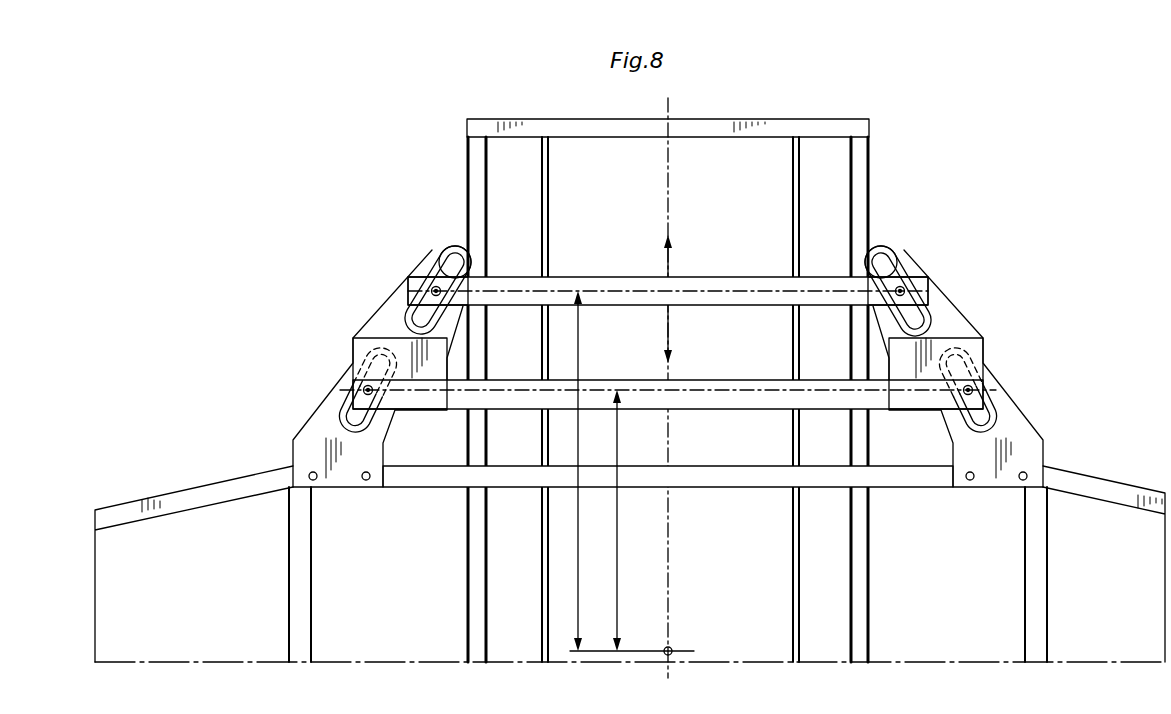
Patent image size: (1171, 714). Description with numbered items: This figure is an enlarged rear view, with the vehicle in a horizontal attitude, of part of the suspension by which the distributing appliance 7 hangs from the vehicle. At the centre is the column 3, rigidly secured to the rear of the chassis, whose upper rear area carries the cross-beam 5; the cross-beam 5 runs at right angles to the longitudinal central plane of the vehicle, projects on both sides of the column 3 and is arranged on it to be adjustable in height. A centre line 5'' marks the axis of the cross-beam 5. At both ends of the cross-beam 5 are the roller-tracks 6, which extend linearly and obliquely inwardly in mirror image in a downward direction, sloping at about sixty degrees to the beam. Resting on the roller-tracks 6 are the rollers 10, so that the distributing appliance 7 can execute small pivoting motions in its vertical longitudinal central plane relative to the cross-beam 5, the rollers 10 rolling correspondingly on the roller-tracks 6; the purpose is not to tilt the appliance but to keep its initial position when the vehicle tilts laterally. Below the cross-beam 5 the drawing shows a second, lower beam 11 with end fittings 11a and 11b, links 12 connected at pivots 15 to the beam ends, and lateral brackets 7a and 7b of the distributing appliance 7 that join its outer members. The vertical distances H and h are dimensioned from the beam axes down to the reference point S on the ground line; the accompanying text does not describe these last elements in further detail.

The column 3 is at (858, 190).
The cross-beam 5 is at (668, 260).
The beam axis 5'' is at (607, 253).
The roller-tracks 6 is at (453, 248).
The distributing appliance 7 is at (1108, 466).
The left bracket 7a is at (303, 452).
The right bracket 7b is at (1007, 443).
The roller 10 is at (395, 321).
The lower cross beam 11 is at (718, 383).
The left beam end plate 11a is at (400, 292).
The right beam end plate 11b is at (940, 297).
The link 12 is at (447, 262).
The pivot pin 15 is at (431, 291).
The height of upper beam H is at (578, 471).
The height of lower beam h is at (615, 520).
The reference point S is at (674, 648).